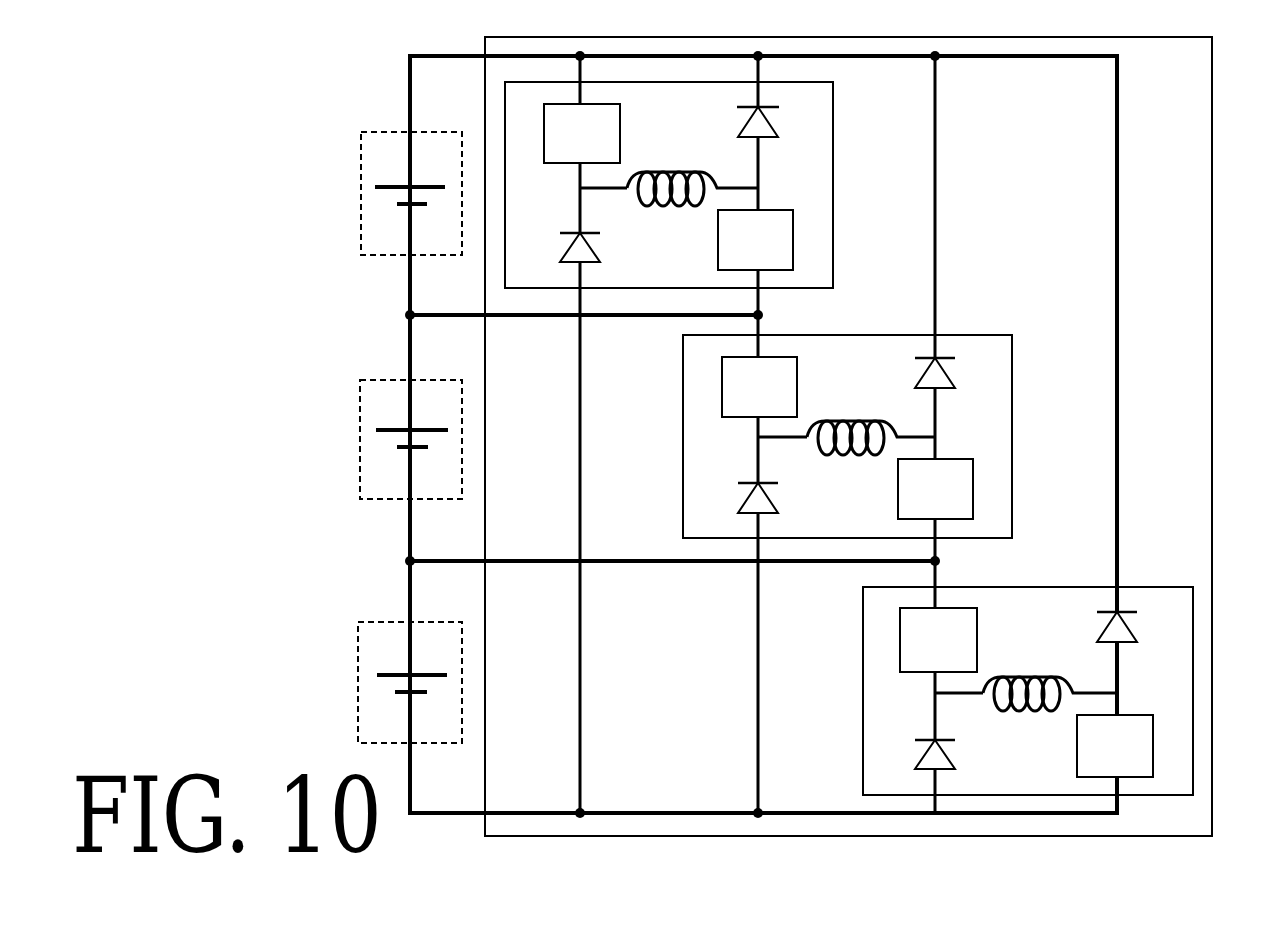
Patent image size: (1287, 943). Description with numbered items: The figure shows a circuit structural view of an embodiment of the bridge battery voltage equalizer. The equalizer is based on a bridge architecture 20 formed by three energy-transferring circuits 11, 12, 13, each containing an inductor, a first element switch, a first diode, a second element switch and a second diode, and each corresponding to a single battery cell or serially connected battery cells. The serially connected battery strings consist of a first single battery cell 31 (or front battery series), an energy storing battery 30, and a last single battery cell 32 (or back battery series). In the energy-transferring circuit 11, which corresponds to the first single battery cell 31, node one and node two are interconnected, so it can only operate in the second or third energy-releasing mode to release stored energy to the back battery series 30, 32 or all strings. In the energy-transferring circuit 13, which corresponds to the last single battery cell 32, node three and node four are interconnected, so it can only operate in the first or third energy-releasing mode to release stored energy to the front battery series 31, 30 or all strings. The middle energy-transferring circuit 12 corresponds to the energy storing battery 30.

The energy-transferring circuit 11 is at (828, 158).
The energy-transferring circuit 12 is at (1005, 419).
The energy-transferring circuit 13 is at (1140, 588).
The bridge architecture 20 is at (1203, 188).
The energy storing battery 30 is at (380, 380).
The first single battery cell 31 is at (390, 135).
The last single battery cell 32 is at (381, 620).